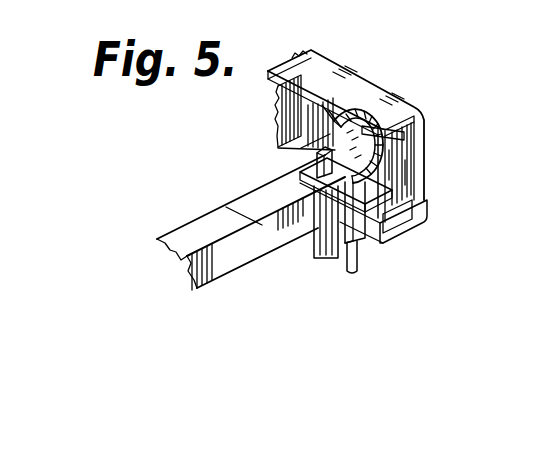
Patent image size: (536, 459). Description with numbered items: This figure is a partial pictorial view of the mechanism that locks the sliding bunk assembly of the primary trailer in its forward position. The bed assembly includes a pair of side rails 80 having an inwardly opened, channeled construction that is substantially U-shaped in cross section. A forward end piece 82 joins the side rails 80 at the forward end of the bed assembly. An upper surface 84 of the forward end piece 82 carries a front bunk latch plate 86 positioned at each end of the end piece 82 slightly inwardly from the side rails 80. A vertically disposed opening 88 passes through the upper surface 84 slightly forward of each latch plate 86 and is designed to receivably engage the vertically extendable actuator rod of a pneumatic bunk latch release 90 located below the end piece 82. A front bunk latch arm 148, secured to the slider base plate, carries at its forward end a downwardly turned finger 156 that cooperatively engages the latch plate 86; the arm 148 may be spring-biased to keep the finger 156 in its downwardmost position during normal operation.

The side rail 80 is at (428, 148).
The forward end piece 82 is at (243, 246).
The upper surface 84 is at (195, 231).
The front bunk latch plate 86 is at (305, 157).
The vertically disposed opening 88 is at (360, 190).
The pneumatic bunk latch release 90 is at (392, 234).
The front bunk latch arm 148 is at (309, 119).
The downwardly turned finger 156 is at (369, 118).